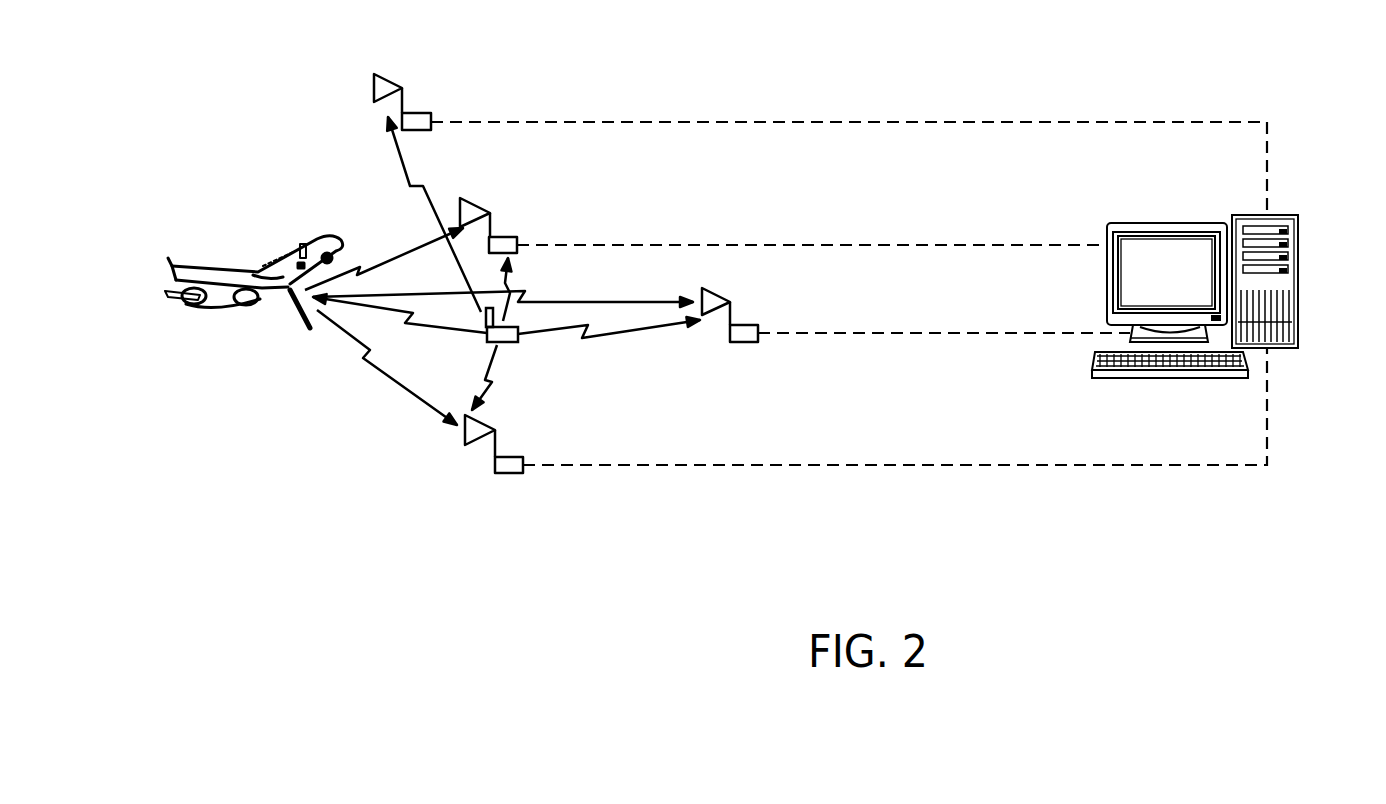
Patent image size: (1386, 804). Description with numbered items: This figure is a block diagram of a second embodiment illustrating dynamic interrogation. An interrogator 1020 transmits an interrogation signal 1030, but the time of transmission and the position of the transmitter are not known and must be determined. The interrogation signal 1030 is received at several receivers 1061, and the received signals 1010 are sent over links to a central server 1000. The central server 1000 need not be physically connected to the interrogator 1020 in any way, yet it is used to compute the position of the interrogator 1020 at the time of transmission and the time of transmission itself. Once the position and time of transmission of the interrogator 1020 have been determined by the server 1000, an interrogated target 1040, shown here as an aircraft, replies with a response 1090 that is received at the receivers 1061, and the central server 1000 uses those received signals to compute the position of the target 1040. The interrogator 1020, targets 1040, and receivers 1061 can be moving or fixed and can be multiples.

The central server 1000 is at (1299, 217).
The received signals 1010 is at (1087, 118).
The interrogator 1020 is at (518, 343).
The interrogation signal 1030 is at (407, 160).
The interrogated targets 1040 is at (238, 272).
The receivers 1061 is at (415, 113).
The response 1090 is at (388, 260).